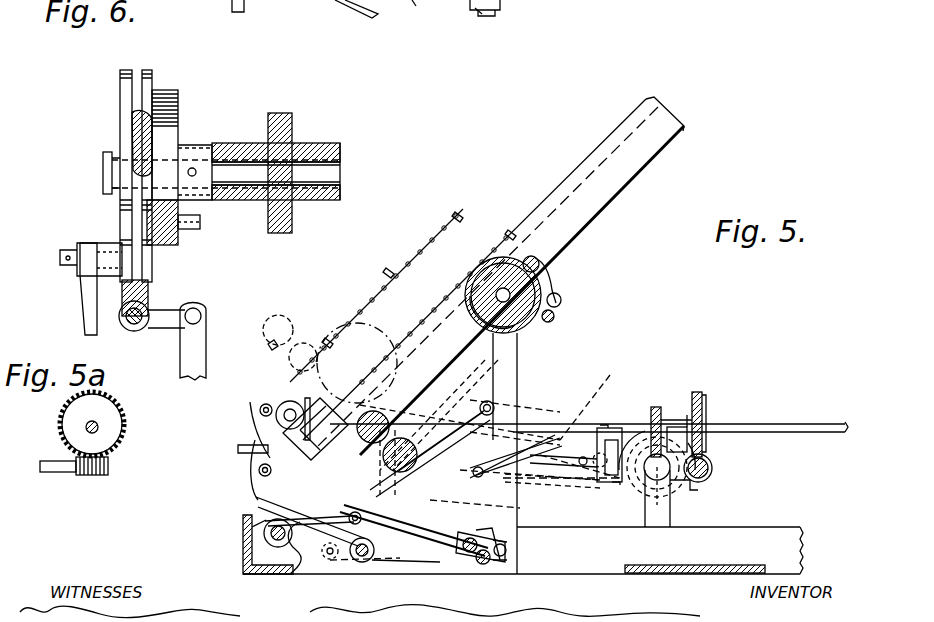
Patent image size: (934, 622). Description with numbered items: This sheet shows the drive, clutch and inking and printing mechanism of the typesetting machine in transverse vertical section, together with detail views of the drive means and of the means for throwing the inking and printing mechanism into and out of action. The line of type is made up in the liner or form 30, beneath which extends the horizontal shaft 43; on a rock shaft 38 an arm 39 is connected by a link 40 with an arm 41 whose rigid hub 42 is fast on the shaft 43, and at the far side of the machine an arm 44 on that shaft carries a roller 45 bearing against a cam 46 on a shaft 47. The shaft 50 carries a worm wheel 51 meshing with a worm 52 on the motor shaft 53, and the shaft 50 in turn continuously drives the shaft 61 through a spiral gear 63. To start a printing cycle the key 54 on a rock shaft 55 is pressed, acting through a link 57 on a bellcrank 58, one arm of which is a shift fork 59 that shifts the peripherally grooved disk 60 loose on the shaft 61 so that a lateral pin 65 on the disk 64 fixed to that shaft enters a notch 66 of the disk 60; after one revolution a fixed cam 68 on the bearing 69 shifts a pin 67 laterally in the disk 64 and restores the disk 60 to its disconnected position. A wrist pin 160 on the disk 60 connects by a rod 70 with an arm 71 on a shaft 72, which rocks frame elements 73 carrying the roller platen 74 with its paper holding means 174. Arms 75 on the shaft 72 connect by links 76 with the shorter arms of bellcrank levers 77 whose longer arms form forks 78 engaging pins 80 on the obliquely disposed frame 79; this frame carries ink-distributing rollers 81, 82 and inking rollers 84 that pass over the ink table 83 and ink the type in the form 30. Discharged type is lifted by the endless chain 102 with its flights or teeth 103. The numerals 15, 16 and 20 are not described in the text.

In FIG. 5, the post 15 is at (517, 392).
In FIG. 5, the bar 16 is at (422, 13).
In FIG. 5, the base 20 is at (560, 578).
In FIG. 5, the liner or form 30 is at (312, 474).
In FIG. 5, the rock shaft 38 is at (270, 510).
In FIG. 5, the arm 39 is at (325, 558).
In FIG. 5, the link 40 is at (289, 546).
In FIG. 5, the arm 41 is at (264, 522).
In FIG. 5, the rigid hub 42 is at (263, 470).
In FIG. 5, the shaft 43 is at (268, 460).
In FIG. 5, the arm 44 is at (272, 410).
In FIG. 5, the roller 45 is at (284, 408).
In FIG. 5, the cam 46 is at (308, 412).
In FIG. 5, the shaft 47 is at (260, 412).
In FIG. 5A, the shaft 50 is at (100, 428).
In FIG. 5, the shaft 50 is at (556, 424).
In FIG. 5A, the worm wheel 51 is at (114, 400).
In FIG. 5A, the worm 52 is at (100, 474).
In FIG. 5, the worm 52 is at (705, 463).
In FIG. 5A, the motor shaft 53 is at (56, 472).
In FIG. 5, the motor shaft 53 is at (696, 482).
In FIG. 5, the key 54 is at (262, 473).
In FIG. 5, the rock shaft 55 is at (365, 562).
In FIG. 6, the link 57 is at (205, 338).
In FIG. 5, the link 57 is at (572, 470).
In FIG. 6, the bellcrank 58 is at (178, 312).
In FIG. 5, the bellcrank 58 is at (592, 492).
In FIG. 6, the shift fork 59 is at (148, 296).
In FIG. 5, the shift fork 59 is at (640, 492).
In FIG. 6, the disk 60 is at (125, 90).
In FIG. 5, the disk 60 is at (672, 484).
In FIG. 6, the shaft 61 is at (106, 170).
In FIG. 5, the shaft 61 is at (660, 494).
In FIG. 6, the spiral gear 63 is at (280, 118).
In FIG. 6, the disk 64 is at (178, 110).
In FIG. 6, the lateral pin 65 is at (165, 148).
In FIG. 6, the notch 66 is at (134, 118).
In FIG. 6, the pin 67 is at (197, 232).
In FIG. 6, the fixed cam 68 is at (200, 220).
In FIG. 6, the bearing 69 is at (228, 146).
In FIG. 6, the rod 70 is at (86, 298).
In FIG. 5, the rod 70 is at (542, 482).
In FIG. 5, the arm 71 is at (478, 474).
In FIG. 5, the shaft 72 is at (505, 12).
In FIG. 5, the frame elements 73 is at (523, 372).
In FIG. 5, the platen 74 is at (535, 255).
In FIG. 5, the arms 75 is at (488, 10).
In FIG. 5, the links 76 is at (480, 426).
In FIG. 5, the bellcrank levers 77 is at (404, 548).
In FIG. 5, the forks 78 is at (438, 550).
In FIG. 5, the frame 79 is at (500, 558).
In FIG. 5, the pins 80 is at (470, 553).
In FIG. 5, the ink-distributing roller 81 is at (486, 566).
In FIG. 5, the ink-distributing roller 82 is at (482, 570).
In FIG. 5, the ink table 83 is at (450, 556).
In FIG. 5, the inking rollers 84 is at (388, 420).
In FIG. 5, the endless chain 102 is at (448, 216).
In FIG. 5, the flights or teeth 103 is at (330, 340).
In FIG. 6, the wrist pin 160 is at (108, 244).
In FIG. 5, the paper holding means 174 is at (560, 278).